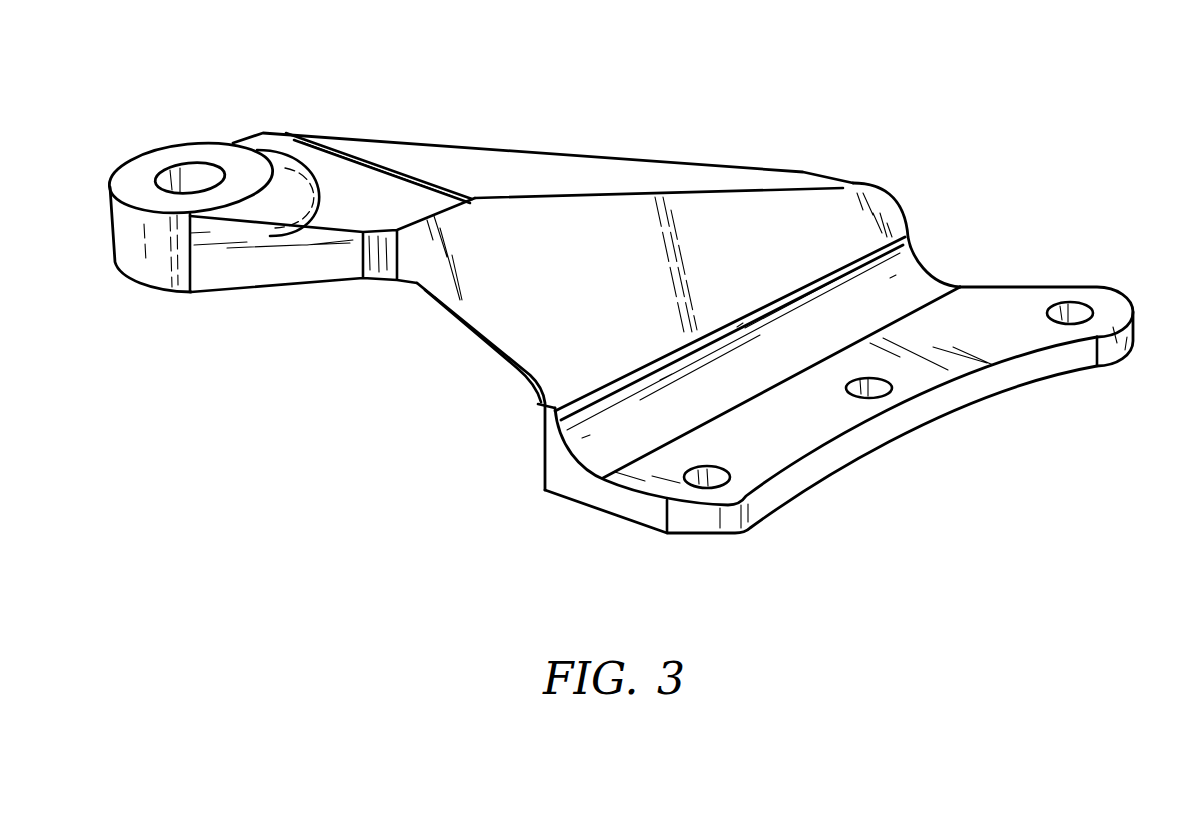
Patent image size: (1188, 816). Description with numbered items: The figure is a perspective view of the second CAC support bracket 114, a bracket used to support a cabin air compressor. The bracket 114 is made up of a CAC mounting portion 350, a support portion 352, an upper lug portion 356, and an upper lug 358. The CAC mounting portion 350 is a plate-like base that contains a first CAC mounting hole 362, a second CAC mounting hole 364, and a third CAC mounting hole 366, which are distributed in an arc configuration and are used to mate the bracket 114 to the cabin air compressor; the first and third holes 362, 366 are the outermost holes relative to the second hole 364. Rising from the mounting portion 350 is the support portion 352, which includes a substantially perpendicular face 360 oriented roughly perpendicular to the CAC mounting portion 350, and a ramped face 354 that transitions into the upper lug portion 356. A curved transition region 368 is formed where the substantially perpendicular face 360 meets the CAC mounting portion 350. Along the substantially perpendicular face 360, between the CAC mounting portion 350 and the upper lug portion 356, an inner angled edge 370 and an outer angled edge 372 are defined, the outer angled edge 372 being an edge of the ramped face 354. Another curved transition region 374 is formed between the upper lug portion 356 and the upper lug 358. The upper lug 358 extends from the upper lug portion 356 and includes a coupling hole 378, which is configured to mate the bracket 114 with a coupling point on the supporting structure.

The second CAC support bracket 114 is at (598, 325).
The CAC mounting portion 350 is at (945, 343).
The support portion 352 is at (522, 233).
The ramped face 354 is at (477, 172).
The upper lug portion 356 is at (358, 193).
The upper lug 358 is at (134, 174).
The substantially perpendicular face 360 is at (602, 283).
The first CAC mounting hole 362 is at (1073, 309).
The second CAC mounting hole 364 is at (880, 393).
The third CAC mounting hole 366 is at (710, 480).
The curved transition region 368 is at (840, 315).
The inner angled edge 370 is at (500, 355).
The outer angled edge 372 is at (705, 190).
The curved transition region 374 is at (288, 183).
The coupling hole 378 is at (186, 178).